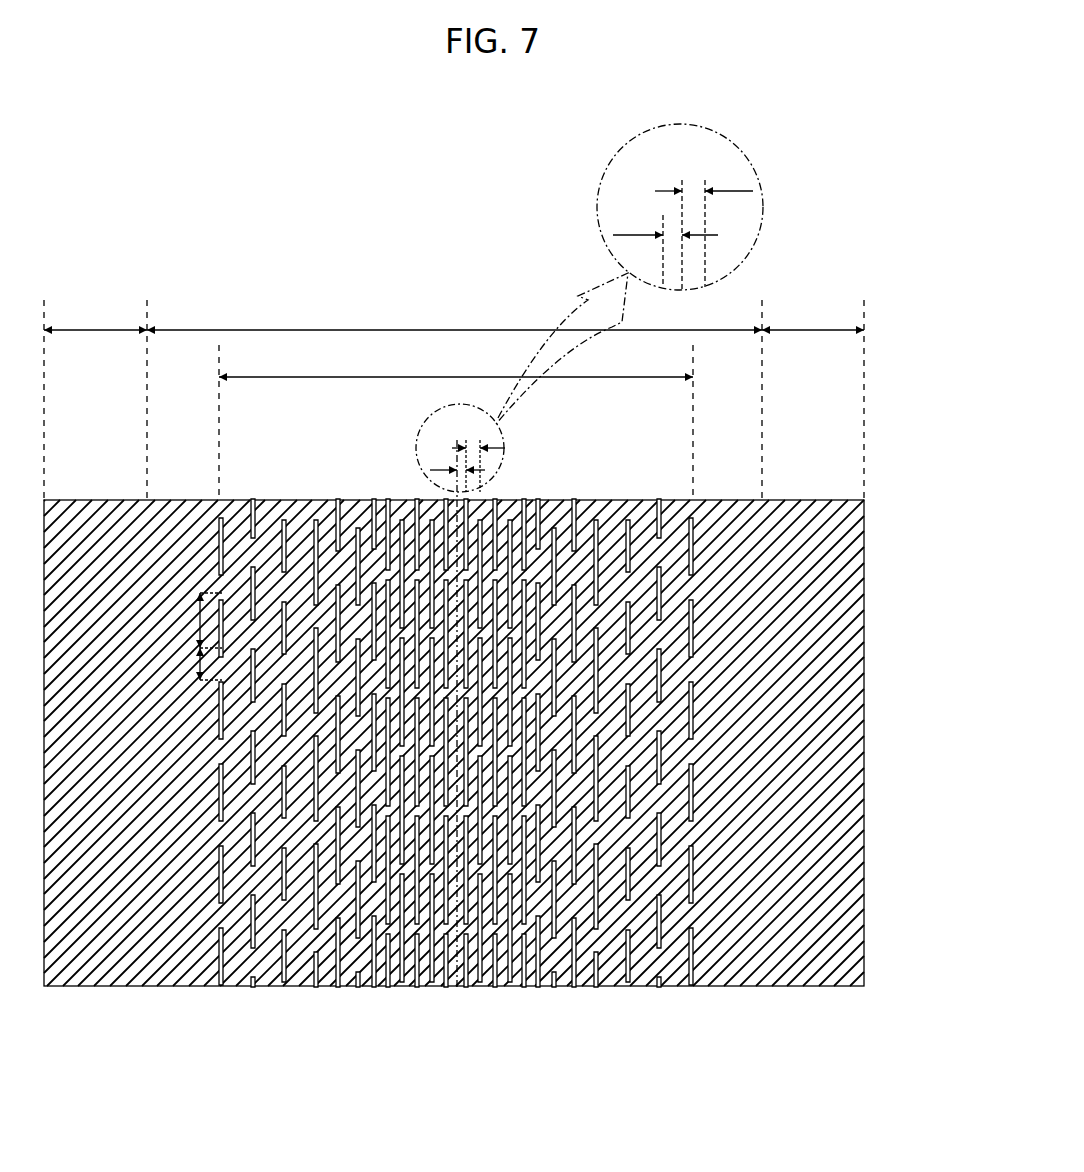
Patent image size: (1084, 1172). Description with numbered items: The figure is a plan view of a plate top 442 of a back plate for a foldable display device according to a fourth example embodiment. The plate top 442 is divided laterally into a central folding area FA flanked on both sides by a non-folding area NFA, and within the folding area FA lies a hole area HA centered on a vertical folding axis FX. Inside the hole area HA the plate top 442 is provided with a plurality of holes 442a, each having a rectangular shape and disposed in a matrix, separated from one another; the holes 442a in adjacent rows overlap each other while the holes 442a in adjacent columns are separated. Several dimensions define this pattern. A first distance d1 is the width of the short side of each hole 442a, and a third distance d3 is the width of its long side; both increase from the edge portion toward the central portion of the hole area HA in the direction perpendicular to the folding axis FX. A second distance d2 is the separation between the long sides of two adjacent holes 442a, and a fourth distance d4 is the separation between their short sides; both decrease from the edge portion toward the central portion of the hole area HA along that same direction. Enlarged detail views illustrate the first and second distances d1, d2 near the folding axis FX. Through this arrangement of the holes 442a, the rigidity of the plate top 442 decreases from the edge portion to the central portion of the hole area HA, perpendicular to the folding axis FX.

The plate top 442 is at (866, 820).
The holes 442a is at (213, 548).
The folding axis FX is at (458, 975).
The non-folding area NFA is at (454, 400).
The folding area FA is at (454, 316).
The hole area HA is at (456, 422).
The first distance d1 is at (574, 342).
The second distance d2 is at (602, 310).
The third distance d3 is at (197, 620).
The fourth distance d4 is at (197, 664).